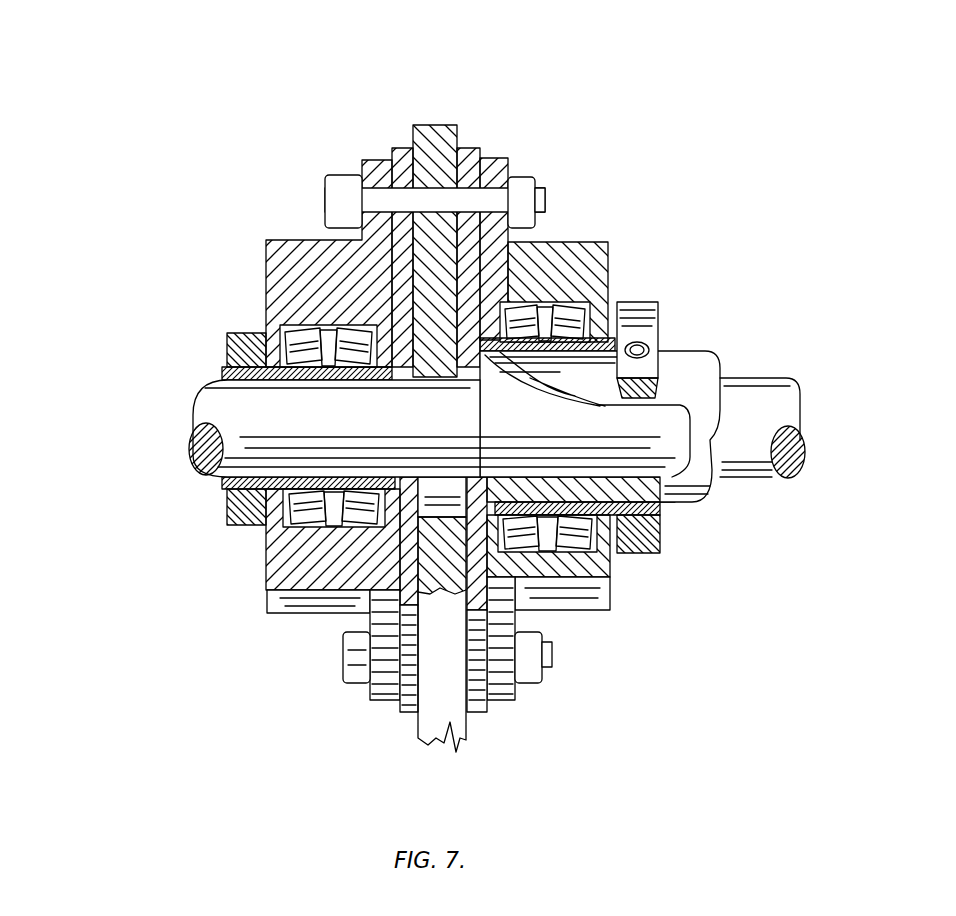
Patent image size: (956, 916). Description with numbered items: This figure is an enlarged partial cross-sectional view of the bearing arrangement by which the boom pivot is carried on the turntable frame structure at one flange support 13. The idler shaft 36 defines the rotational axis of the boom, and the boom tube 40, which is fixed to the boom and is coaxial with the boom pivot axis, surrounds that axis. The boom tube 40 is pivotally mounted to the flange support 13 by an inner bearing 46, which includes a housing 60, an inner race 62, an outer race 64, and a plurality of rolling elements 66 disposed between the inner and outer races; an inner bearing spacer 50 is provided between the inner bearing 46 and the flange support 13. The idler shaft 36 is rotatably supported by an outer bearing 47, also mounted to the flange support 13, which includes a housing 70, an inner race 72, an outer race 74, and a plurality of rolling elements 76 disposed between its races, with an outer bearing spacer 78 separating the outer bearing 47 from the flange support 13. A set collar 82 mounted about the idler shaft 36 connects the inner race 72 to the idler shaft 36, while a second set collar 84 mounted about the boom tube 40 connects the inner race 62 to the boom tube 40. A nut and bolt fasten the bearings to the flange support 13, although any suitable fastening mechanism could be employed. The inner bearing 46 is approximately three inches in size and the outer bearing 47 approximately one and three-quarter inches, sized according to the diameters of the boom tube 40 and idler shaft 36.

The flange support 13 is at (435, 125).
The idler shaft 36 is at (783, 378).
The boom tube 40 is at (705, 353).
The inner bearing 46 is at (644, 228).
The outer bearing 47 is at (173, 260).
The inner bearing spacer 50 is at (480, 148).
The housing 60 is at (600, 242).
The inner race 62 is at (663, 510).
The outer race 64 is at (573, 552).
The rolling elements 66 is at (520, 547).
The housing 70 is at (280, 242).
The inner race 72 is at (225, 485).
The outer race 74 is at (267, 577).
The rolling elements 76 is at (360, 520).
The outer bearing spacer 78 is at (395, 148).
The set collar 82 is at (227, 333).
The second set collar 84 is at (650, 302).